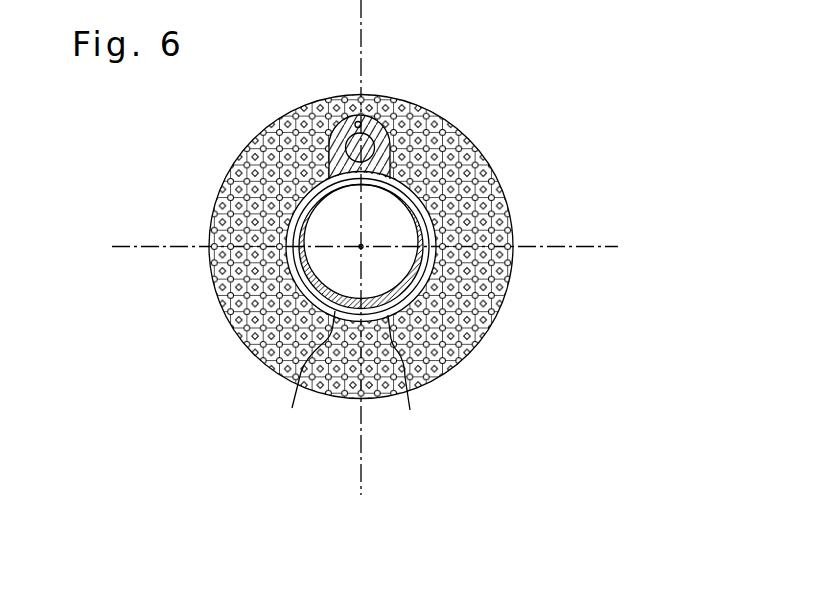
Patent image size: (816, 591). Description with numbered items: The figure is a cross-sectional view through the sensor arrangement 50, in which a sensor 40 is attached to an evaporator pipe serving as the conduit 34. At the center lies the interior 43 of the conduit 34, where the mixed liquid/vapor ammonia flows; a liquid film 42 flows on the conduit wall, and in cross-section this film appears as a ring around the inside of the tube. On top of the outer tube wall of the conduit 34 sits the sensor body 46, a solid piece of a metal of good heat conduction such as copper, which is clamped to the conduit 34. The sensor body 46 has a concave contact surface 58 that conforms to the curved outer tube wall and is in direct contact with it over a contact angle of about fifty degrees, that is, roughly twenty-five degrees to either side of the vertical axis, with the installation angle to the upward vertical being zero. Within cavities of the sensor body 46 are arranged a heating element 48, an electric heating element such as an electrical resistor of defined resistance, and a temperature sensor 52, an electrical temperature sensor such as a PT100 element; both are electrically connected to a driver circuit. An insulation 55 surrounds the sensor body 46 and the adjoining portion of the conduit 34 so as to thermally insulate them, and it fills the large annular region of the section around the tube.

The conduit 34 is at (406, 386).
The sensor 40 is at (614, 64).
The liquid film 42 is at (304, 375).
The interior 43 is at (350, 232).
The sensor body 46 is at (377, 156).
The heating element 48 is at (357, 125).
The sensor arrangement 50 is at (96, 171).
The temperature sensor 52 is at (363, 117).
The insulation 55 is at (447, 203).
The contact surface 58 is at (383, 183).